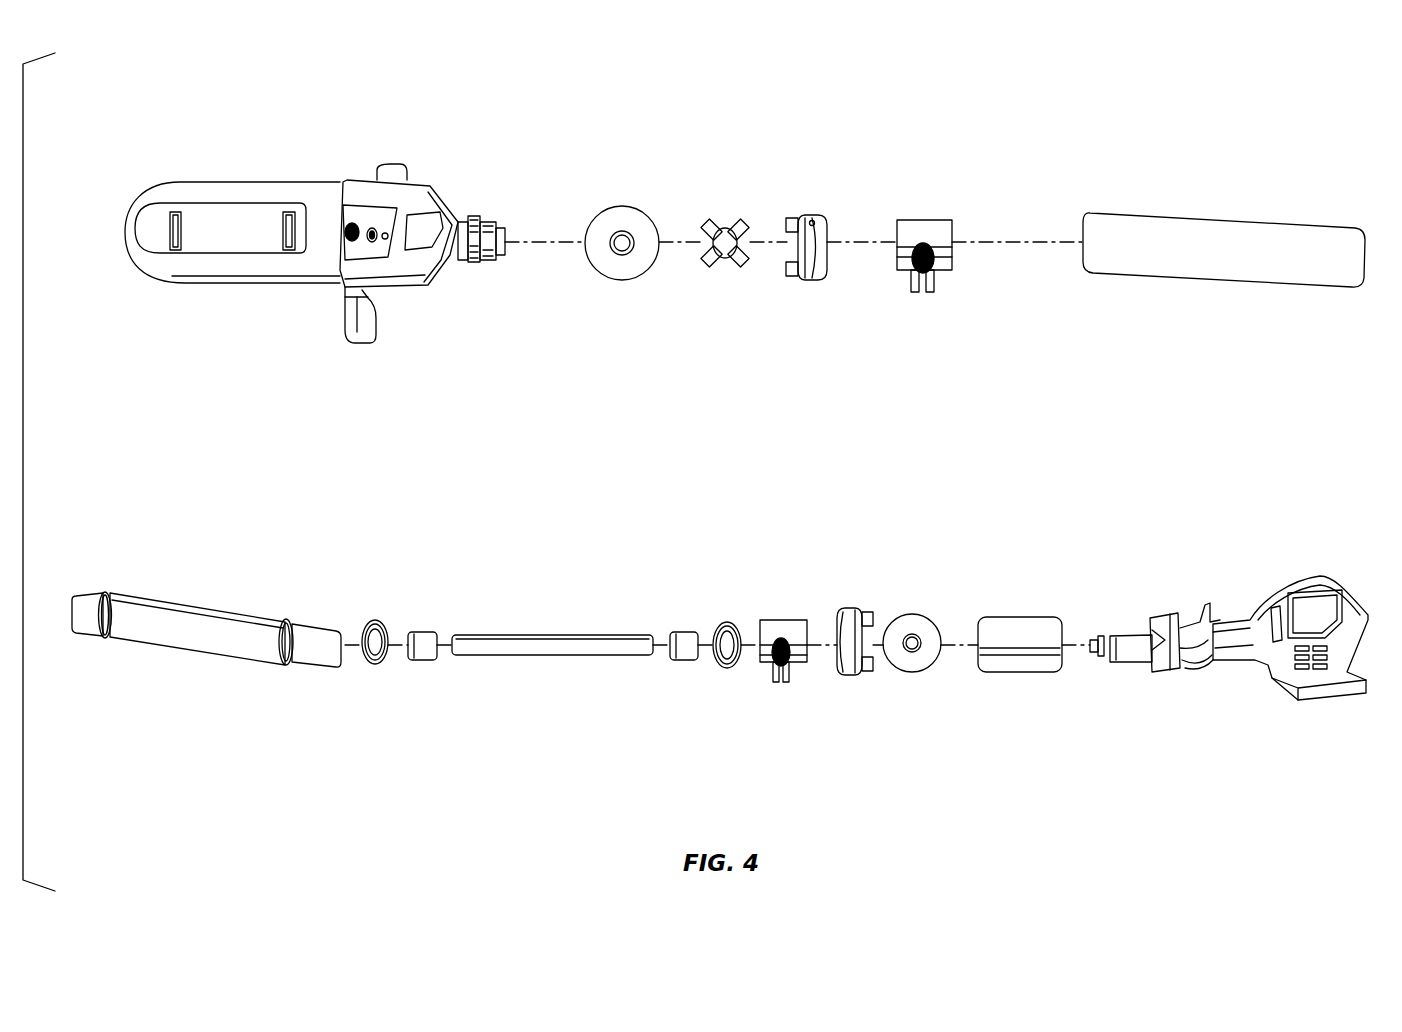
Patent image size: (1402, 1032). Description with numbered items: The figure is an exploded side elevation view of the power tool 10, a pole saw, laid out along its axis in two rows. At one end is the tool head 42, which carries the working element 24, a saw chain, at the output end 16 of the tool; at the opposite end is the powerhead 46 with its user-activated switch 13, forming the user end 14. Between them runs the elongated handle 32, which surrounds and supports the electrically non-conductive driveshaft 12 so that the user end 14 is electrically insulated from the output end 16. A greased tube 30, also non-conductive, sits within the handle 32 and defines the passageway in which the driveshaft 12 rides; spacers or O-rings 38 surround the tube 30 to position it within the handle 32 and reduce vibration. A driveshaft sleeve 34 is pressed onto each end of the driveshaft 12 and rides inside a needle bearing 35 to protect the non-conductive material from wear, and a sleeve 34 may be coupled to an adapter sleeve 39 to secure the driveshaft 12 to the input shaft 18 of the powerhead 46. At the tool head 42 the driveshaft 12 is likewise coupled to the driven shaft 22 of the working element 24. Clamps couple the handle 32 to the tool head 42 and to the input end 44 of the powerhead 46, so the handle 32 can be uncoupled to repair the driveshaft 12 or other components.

The power tool 10 is at (1243, 130).
The driveshaft 12 is at (543, 650).
The user-activated switch 13 is at (1212, 676).
The user end 14 is at (1299, 665).
The output end 16 is at (121, 228).
The input shaft 18 is at (1125, 645).
The driven shaft 22 is at (497, 218).
The working element 24 is at (235, 215).
The greased tube 30 is at (200, 625).
The handle 32 is at (1208, 240).
The driveshaft sleeve 34 is at (422, 660).
The needle bearing 35 is at (372, 620).
The spacer 38 is at (105, 598).
The adapter sleeve 39 is at (1020, 667).
The tool head 42 is at (363, 172).
The input end 44 is at (1130, 668).
The powerhead 46 is at (1308, 615).